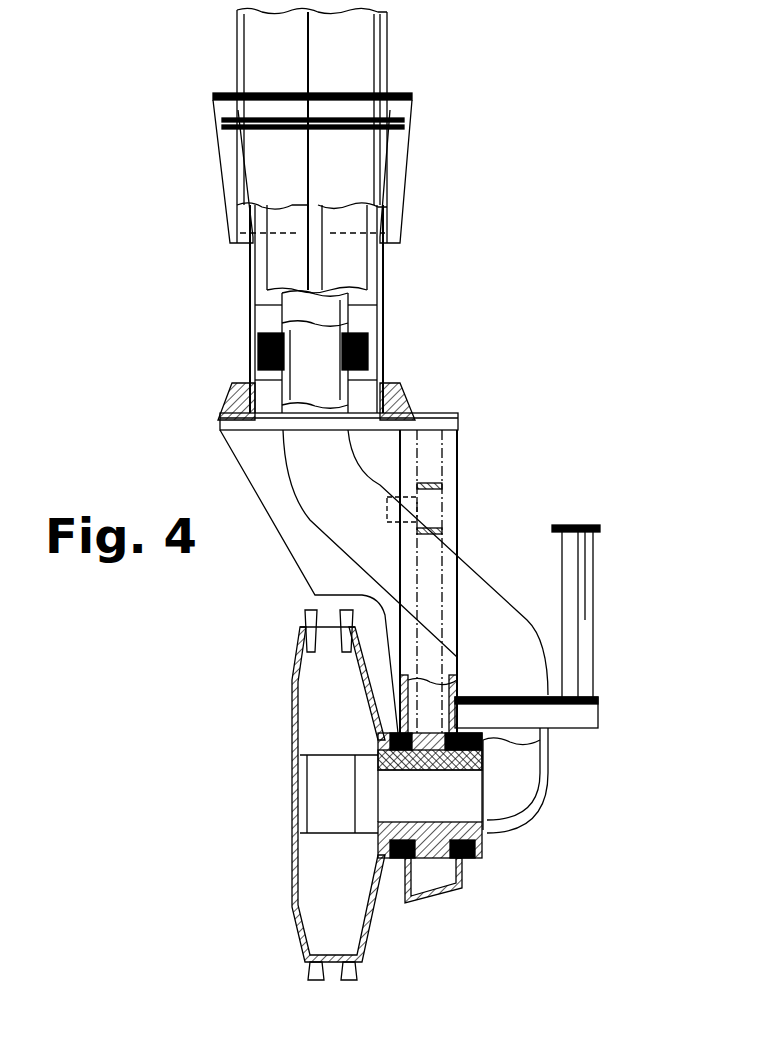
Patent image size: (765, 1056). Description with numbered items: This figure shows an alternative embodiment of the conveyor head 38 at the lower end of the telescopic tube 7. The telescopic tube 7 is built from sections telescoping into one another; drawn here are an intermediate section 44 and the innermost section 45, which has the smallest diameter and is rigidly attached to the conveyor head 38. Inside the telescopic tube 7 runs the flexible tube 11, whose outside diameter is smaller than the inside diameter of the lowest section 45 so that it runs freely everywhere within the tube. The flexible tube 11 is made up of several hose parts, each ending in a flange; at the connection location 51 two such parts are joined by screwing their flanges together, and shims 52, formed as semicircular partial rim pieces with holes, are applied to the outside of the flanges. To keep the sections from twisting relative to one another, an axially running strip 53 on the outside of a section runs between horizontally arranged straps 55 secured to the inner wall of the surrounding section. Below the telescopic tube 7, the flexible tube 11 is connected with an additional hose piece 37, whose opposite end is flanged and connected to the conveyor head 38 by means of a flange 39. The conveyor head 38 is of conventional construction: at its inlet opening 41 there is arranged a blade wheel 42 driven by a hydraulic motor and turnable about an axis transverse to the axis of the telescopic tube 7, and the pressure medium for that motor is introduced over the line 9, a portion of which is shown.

The telescopic tube 7 is at (410, 46).
The line 9 is at (588, 575).
The flexible tube 11 is at (345, 305).
The hose piece 37 is at (330, 508).
The vessel 38 is at (283, 778).
The flange 39 is at (495, 695).
The inlet opening 41 is at (390, 820).
The blade wheel 42 is at (295, 885).
The intermediate section 44 is at (258, 50).
The innermost section 45 is at (250, 327).
The connection location 51 is at (380, 322).
The shims 52 is at (255, 372).
The strip 53 is at (300, 268).
The strap 55 is at (240, 253).